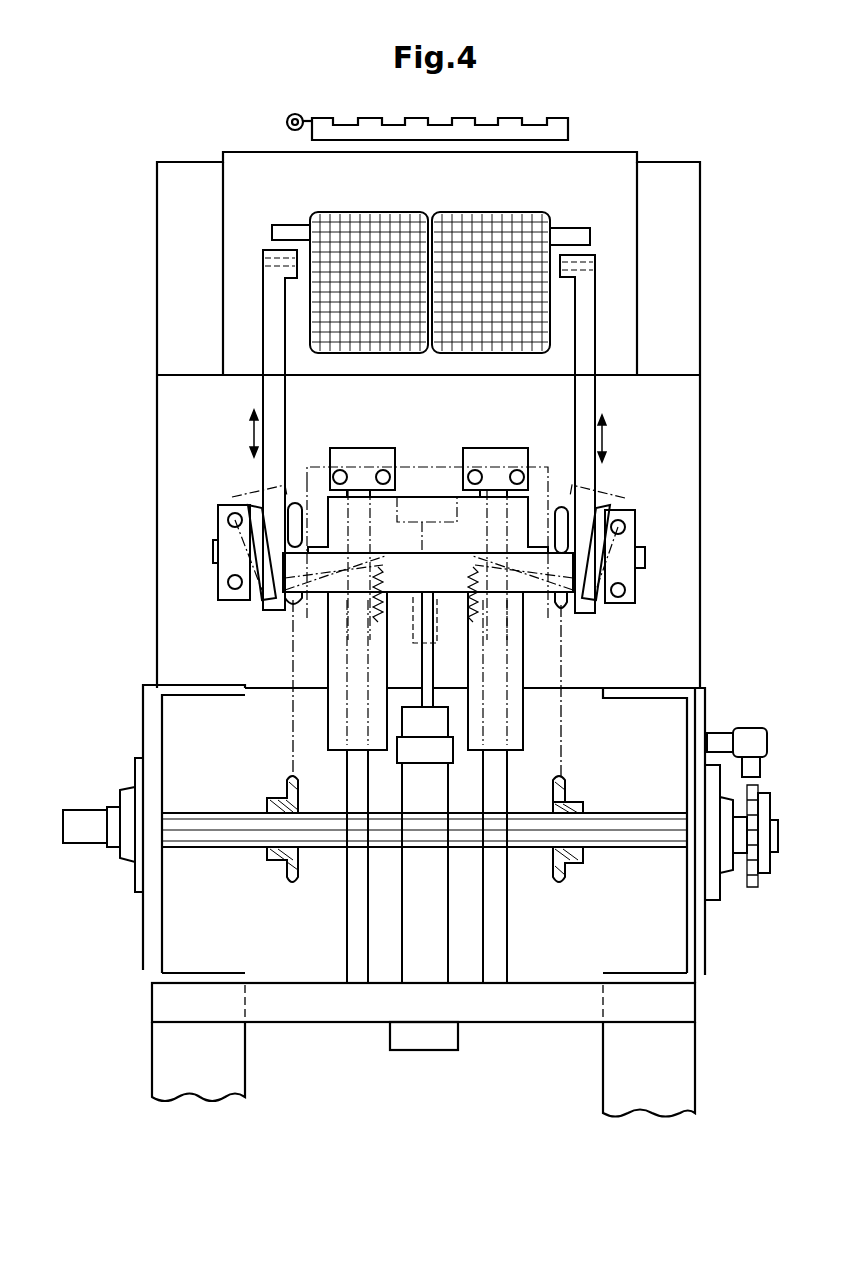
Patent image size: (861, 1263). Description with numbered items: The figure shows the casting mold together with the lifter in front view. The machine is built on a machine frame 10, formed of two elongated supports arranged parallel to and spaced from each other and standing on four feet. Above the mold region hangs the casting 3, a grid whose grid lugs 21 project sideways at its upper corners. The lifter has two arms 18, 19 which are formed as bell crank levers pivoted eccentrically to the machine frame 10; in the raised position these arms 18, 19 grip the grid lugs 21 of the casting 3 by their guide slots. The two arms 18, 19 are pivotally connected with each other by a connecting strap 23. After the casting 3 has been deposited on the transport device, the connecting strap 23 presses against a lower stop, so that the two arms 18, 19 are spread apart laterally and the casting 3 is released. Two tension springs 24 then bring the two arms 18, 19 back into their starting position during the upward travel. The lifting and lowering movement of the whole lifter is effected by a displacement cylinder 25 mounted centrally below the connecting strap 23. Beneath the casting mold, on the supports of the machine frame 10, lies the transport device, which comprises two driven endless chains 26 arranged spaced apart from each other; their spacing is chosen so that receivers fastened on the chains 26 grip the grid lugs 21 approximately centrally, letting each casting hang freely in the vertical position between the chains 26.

The casting 3 is at (527, 240).
The grid lugs 21 is at (582, 235).
The arm 19 is at (273, 395).
The arm 18 is at (585, 397).
The connecting strap 23 is at (443, 567).
The tension springs 24 is at (470, 608).
The displacement cylinder 25 is at (442, 785).
The endless chains 26 is at (562, 652).
The machine frame 10 is at (680, 1067).